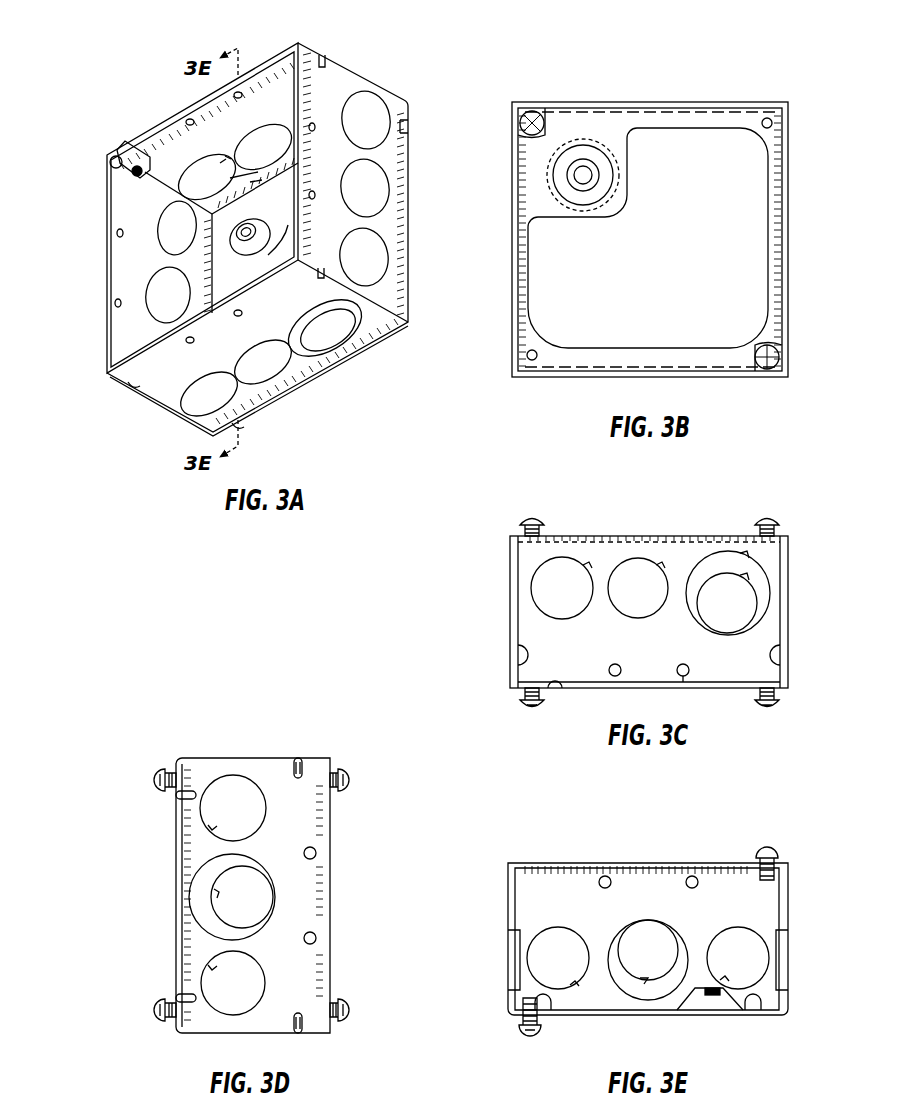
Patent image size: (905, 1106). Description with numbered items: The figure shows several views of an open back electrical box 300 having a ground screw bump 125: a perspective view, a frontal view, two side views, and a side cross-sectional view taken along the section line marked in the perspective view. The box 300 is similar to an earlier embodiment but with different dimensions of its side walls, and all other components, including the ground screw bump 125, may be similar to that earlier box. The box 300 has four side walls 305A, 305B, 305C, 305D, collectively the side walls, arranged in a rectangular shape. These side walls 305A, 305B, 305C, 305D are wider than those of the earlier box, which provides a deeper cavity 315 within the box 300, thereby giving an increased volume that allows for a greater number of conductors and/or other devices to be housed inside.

In FIG. 3A, the open back electrical box 300 is at (145, 29).
In FIG. 3B, the open back electrical box 300 is at (761, 75).
In FIG. 3C, the open back electrical box 300 is at (761, 498).
In FIG. 3D, the open back electrical box 300 is at (184, 714).
In FIG. 3E, the open back electrical box 300 is at (761, 823).
In FIG. 3A, the side wall 305A is at (282, 68).
In FIG. 3C, the side wall 305A is at (768, 631).
In FIG. 3A, the side wall 305B is at (338, 81).
In FIG. 3D, the side wall 305B is at (313, 823).
In FIG. 3A, the side wall 305C is at (158, 382).
In FIG. 3A, the side wall 305D is at (122, 198).
In FIG. 3A, the cavity 315 is at (232, 216).
In FIG. 3A, the ground screw bump 125 is at (265, 237).
In FIG. 3B, the ground screw bump 125 is at (608, 174).
In FIG. 3E, the ground screw bump 125 is at (723, 993).